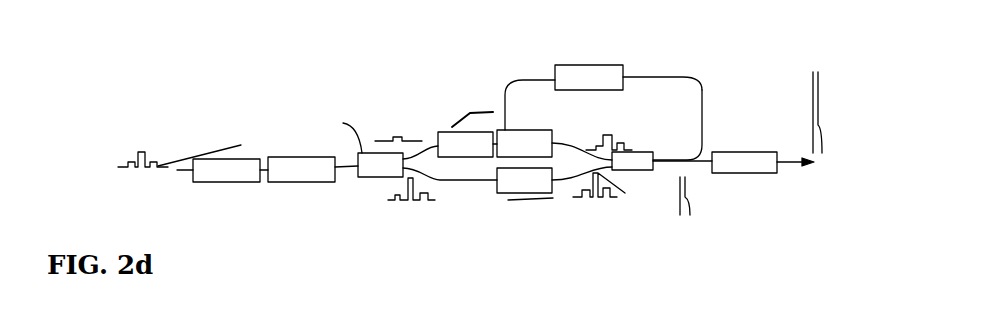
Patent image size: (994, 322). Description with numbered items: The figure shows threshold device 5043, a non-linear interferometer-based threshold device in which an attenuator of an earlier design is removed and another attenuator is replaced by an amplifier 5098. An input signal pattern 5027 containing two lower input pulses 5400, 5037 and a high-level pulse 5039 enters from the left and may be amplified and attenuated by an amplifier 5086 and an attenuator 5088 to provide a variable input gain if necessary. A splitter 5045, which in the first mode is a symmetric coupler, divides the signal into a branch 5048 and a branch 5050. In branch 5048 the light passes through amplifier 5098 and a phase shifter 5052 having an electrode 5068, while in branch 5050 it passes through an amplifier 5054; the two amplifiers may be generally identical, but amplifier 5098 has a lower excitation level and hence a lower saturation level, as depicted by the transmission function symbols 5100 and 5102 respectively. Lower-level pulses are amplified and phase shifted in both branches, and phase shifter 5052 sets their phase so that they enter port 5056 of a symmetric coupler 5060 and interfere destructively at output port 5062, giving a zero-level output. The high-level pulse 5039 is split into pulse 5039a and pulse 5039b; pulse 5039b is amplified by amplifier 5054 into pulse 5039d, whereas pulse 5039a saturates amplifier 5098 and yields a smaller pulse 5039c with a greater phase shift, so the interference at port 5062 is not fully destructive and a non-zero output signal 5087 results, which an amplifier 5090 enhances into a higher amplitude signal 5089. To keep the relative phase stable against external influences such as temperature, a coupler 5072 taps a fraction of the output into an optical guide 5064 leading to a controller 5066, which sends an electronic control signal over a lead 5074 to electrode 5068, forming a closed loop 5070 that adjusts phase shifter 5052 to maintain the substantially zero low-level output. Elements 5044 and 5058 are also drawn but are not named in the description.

The lower input pulse 5400 is at (128, 163).
The high-level pulse 5039 is at (169, 132).
The lower input pulse 5037 is at (241, 145).
The input signal pattern 5027 is at (142, 168).
The input fiber 5044 is at (181, 171).
The amplifier 5086 is at (232, 183).
The attenuator 5088 is at (307, 183).
The splitter 5045 is at (369, 178).
The pulse 5039a is at (397, 137).
The branch 5048 is at (432, 143).
The branch 5050 is at (444, 181).
The amplifier 5098 is at (440, 132).
The transmission function symbol 5100 is at (482, 96).
The electrode 5068 is at (537, 130).
The phase shifter 5052 is at (540, 130).
The port 5056 is at (557, 143).
The amplifier 5054 is at (505, 193).
The transmission function symbol 5102 is at (508, 200).
The lower amplifier output fiber 5058 is at (555, 188).
The pulse 5039b is at (411, 200).
The pulse 5039d is at (625, 193).
The coupler 5060 is at (642, 170).
The pulse 5039c is at (612, 135).
The lead 5074 is at (555, 68).
The controller 5066 is at (623, 84).
The closed loop 5070 is at (685, 77).
The optical guide 5064 is at (702, 115).
The threshold device 5043 is at (742, 106).
The coupler 5072 is at (703, 152).
The output port 5062 is at (712, 173).
The amplifier 5090 is at (777, 173).
The higher amplitude signal 5089 is at (822, 146).
The output signal 5087 is at (690, 212).